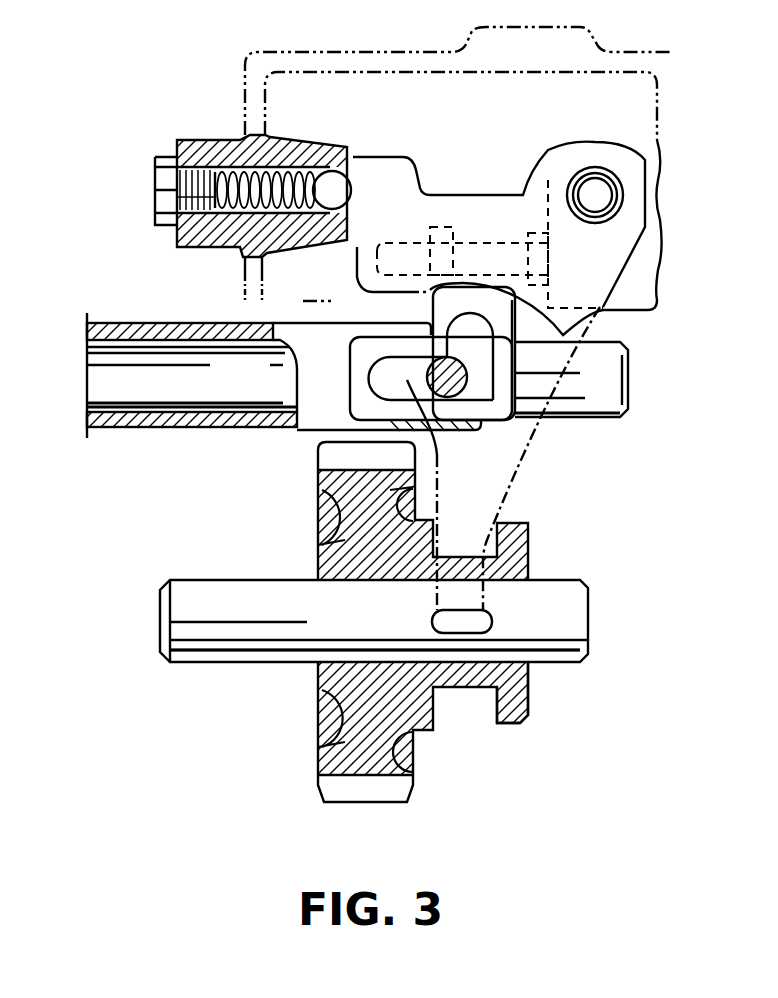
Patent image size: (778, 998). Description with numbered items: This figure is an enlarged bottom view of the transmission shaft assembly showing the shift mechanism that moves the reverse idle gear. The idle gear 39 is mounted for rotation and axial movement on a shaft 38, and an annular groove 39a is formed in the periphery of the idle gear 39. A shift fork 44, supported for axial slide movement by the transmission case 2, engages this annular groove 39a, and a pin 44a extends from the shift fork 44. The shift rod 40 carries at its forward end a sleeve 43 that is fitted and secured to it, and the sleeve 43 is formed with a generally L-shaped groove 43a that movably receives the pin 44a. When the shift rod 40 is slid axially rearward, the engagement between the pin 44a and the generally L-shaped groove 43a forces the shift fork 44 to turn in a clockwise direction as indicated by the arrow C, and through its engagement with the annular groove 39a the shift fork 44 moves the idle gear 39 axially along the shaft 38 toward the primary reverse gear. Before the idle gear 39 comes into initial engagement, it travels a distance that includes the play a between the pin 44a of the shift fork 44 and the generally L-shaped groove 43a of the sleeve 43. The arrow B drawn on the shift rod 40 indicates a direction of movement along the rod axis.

The transmission case 2 is at (645, 253).
The shaft 38 is at (225, 633).
The idle gear 39 is at (368, 793).
The annular groove 39a is at (463, 697).
The shift rod 40 is at (142, 342).
The sleeve 43 is at (202, 422).
The generally L-shaped groove 43a is at (385, 378).
The shift fork 44 is at (503, 500).
The pin 44a is at (475, 397).
The play a is at (477, 380).
The direction B is at (82, 377).
The arrow C is at (420, 622).